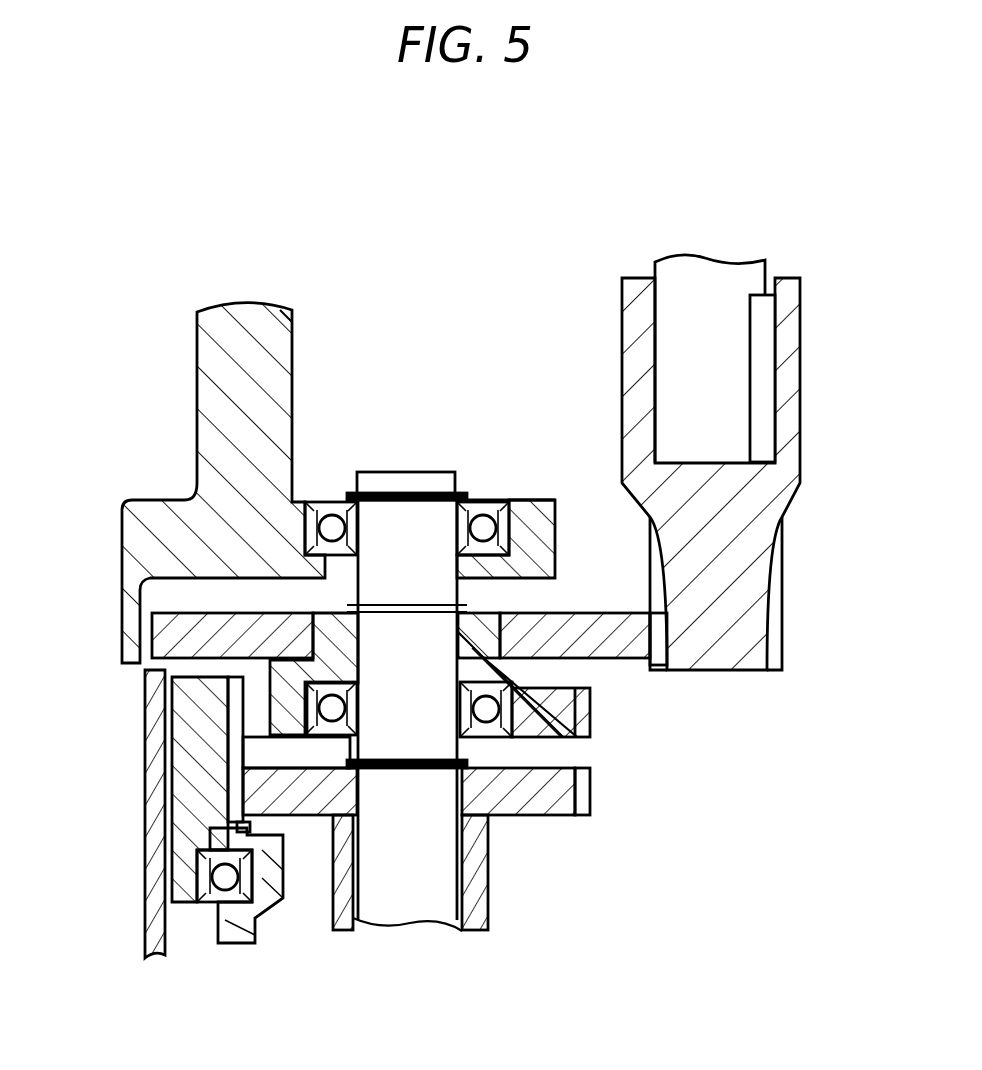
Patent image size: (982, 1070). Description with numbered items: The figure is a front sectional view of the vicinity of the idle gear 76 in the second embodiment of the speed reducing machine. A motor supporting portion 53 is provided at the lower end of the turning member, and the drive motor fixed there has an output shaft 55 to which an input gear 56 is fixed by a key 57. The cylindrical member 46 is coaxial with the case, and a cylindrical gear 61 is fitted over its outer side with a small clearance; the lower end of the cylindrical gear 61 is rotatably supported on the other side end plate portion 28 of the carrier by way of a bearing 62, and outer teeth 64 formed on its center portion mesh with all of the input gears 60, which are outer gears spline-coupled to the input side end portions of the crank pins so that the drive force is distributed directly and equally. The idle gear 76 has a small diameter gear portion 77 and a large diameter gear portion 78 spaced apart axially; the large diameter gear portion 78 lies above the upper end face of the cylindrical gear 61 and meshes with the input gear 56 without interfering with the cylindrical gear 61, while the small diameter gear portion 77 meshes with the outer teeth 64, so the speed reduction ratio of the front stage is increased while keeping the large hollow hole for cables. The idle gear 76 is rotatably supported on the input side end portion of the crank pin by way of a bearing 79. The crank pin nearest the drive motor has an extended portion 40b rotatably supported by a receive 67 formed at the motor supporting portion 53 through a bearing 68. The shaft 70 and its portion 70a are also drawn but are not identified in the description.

The other side end plate portion 28 is at (237, 938).
The extended portion 40b is at (405, 508).
The cylindrical member 46 is at (152, 862).
The motor supporting portion 53 is at (243, 317).
The output shaft 55 is at (706, 258).
The input gear 56 is at (752, 602).
The key 57 is at (767, 375).
The input gears 60 is at (550, 815).
The cylindrical gear 61 is at (180, 795).
The bearing 62 is at (223, 903).
The outer teeth 64 is at (233, 750).
The receive 67 is at (531, 513).
The bearing 68 is at (483, 520).
The shaft 70 is at (401, 912).
The shaft hub portion 70a is at (452, 923).
The idle gear 76 is at (603, 698).
The small diameter gear portion 77 is at (563, 722).
The large diameter gear portion 78 is at (600, 608).
The bearing 79 is at (490, 708).